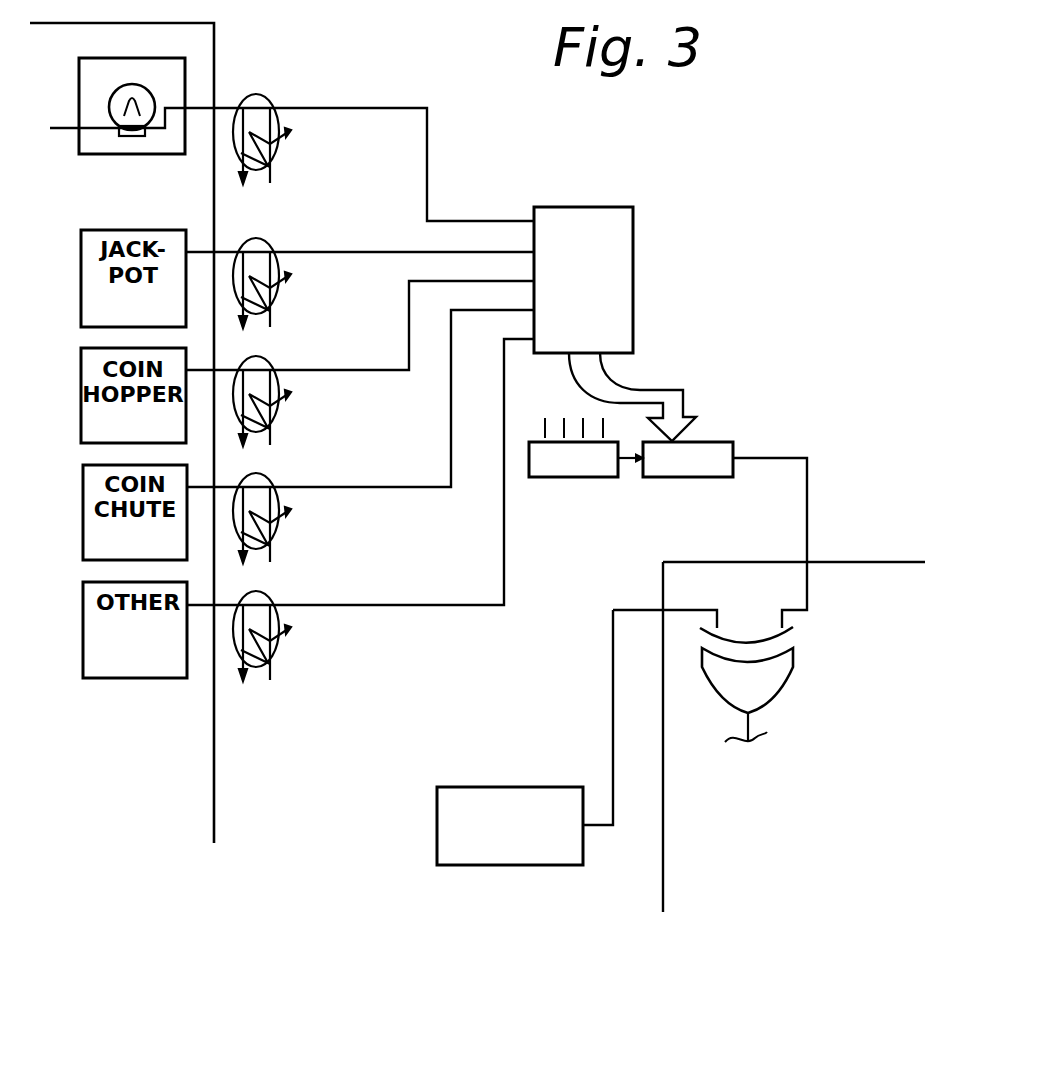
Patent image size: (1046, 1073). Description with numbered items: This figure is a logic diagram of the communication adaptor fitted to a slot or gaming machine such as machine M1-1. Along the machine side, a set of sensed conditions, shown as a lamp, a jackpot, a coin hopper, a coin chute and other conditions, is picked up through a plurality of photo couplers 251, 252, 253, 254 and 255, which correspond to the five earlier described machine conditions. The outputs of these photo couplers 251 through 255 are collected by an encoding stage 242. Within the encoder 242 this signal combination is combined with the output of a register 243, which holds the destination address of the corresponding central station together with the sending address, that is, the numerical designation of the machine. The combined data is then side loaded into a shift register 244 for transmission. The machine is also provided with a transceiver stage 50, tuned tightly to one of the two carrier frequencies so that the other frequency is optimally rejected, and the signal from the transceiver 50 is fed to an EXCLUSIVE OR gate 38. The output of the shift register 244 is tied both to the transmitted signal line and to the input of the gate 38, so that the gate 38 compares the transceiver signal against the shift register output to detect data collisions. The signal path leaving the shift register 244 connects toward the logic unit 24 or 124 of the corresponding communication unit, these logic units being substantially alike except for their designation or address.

The photo coupler 251 is at (272, 93).
The photo coupler 252 is at (262, 238).
The photo coupler 253 is at (263, 354).
The photo coupler 254 is at (270, 472).
The photo coupler 255 is at (270, 588).
The encoding stage 242 is at (633, 287).
The register 243 is at (552, 477).
The shift register 244 is at (728, 440).
The logic unit 24 is at (850, 562).
The logic unit 124 is at (794, 645).
The EXCLUSIVE OR gate 38 is at (782, 678).
The transceiver stage 50 is at (523, 787).
The slot or gaming machine M1-1 is at (216, 770).